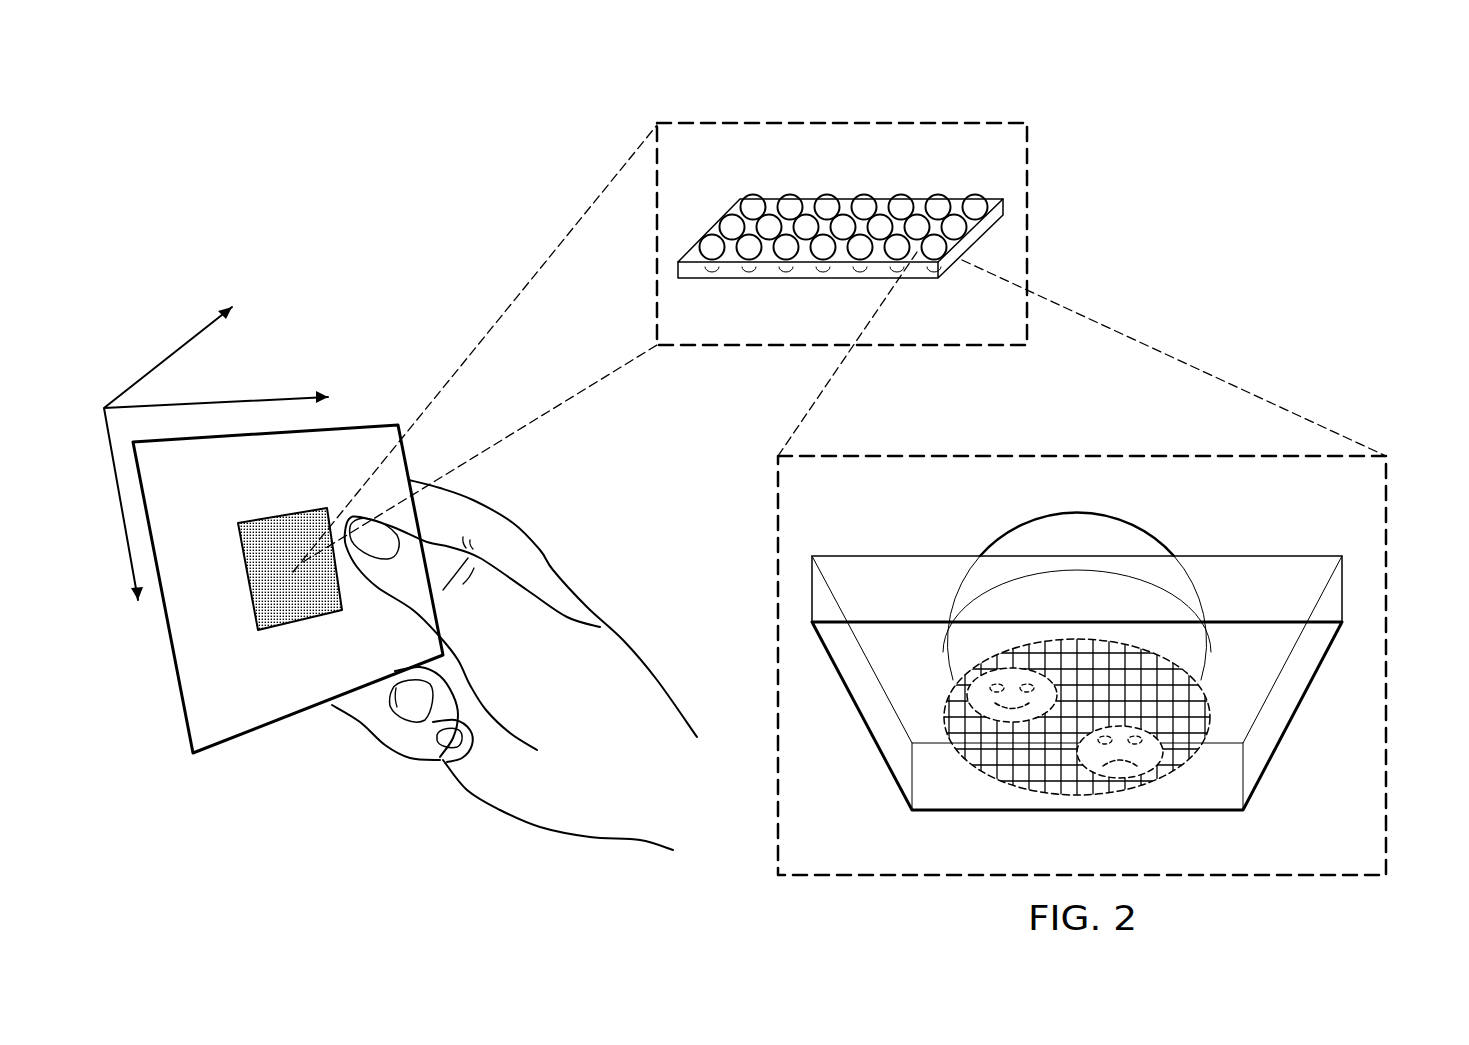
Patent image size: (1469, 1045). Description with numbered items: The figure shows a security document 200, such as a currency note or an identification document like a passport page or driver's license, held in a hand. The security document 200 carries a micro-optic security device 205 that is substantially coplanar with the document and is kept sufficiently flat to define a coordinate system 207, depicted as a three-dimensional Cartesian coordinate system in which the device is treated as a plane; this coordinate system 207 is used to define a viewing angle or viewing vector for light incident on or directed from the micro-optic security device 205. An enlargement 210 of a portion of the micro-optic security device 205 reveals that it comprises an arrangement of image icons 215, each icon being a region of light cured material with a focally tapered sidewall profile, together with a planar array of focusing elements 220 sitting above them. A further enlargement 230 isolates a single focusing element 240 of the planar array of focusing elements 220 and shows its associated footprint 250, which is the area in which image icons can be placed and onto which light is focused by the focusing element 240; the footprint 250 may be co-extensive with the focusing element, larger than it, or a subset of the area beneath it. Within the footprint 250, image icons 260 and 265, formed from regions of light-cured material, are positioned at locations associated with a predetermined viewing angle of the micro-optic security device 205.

The security document 200 is at (170, 692).
The micro-optic security device 205 is at (285, 526).
The coordinate system 207 is at (160, 360).
The enlargement 210 is at (1040, 178).
The arrangement of image icons 215 is at (748, 278).
The planar array of focusing elements 220 is at (930, 198).
The further enlargement 230 is at (1400, 734).
The focusing element 240 is at (1010, 545).
The footprint 250 is at (1212, 703).
The image icon 260 is at (983, 672).
The image icon 265 is at (1130, 786).